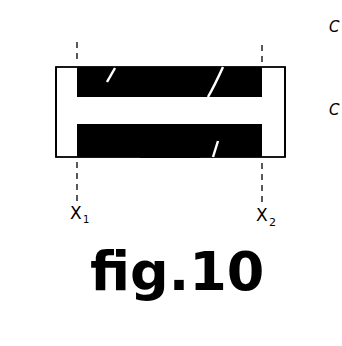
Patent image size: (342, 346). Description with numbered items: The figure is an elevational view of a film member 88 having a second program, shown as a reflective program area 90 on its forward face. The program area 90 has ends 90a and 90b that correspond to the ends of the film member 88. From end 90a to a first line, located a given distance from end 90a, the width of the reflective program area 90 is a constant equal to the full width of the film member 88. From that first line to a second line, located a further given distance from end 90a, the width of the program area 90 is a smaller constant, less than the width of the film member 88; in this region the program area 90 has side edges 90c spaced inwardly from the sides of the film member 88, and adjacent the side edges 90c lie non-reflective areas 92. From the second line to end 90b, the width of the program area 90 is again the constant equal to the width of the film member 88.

The film member 88 is at (191, 54).
The reflective program area 90 is at (130, 118).
The end of program area 90a is at (55, 92).
The end of program area 90b is at (285, 110).
The side edges of program area 90c is at (223, 67).
The non-reflective areas 92 is at (115, 68).